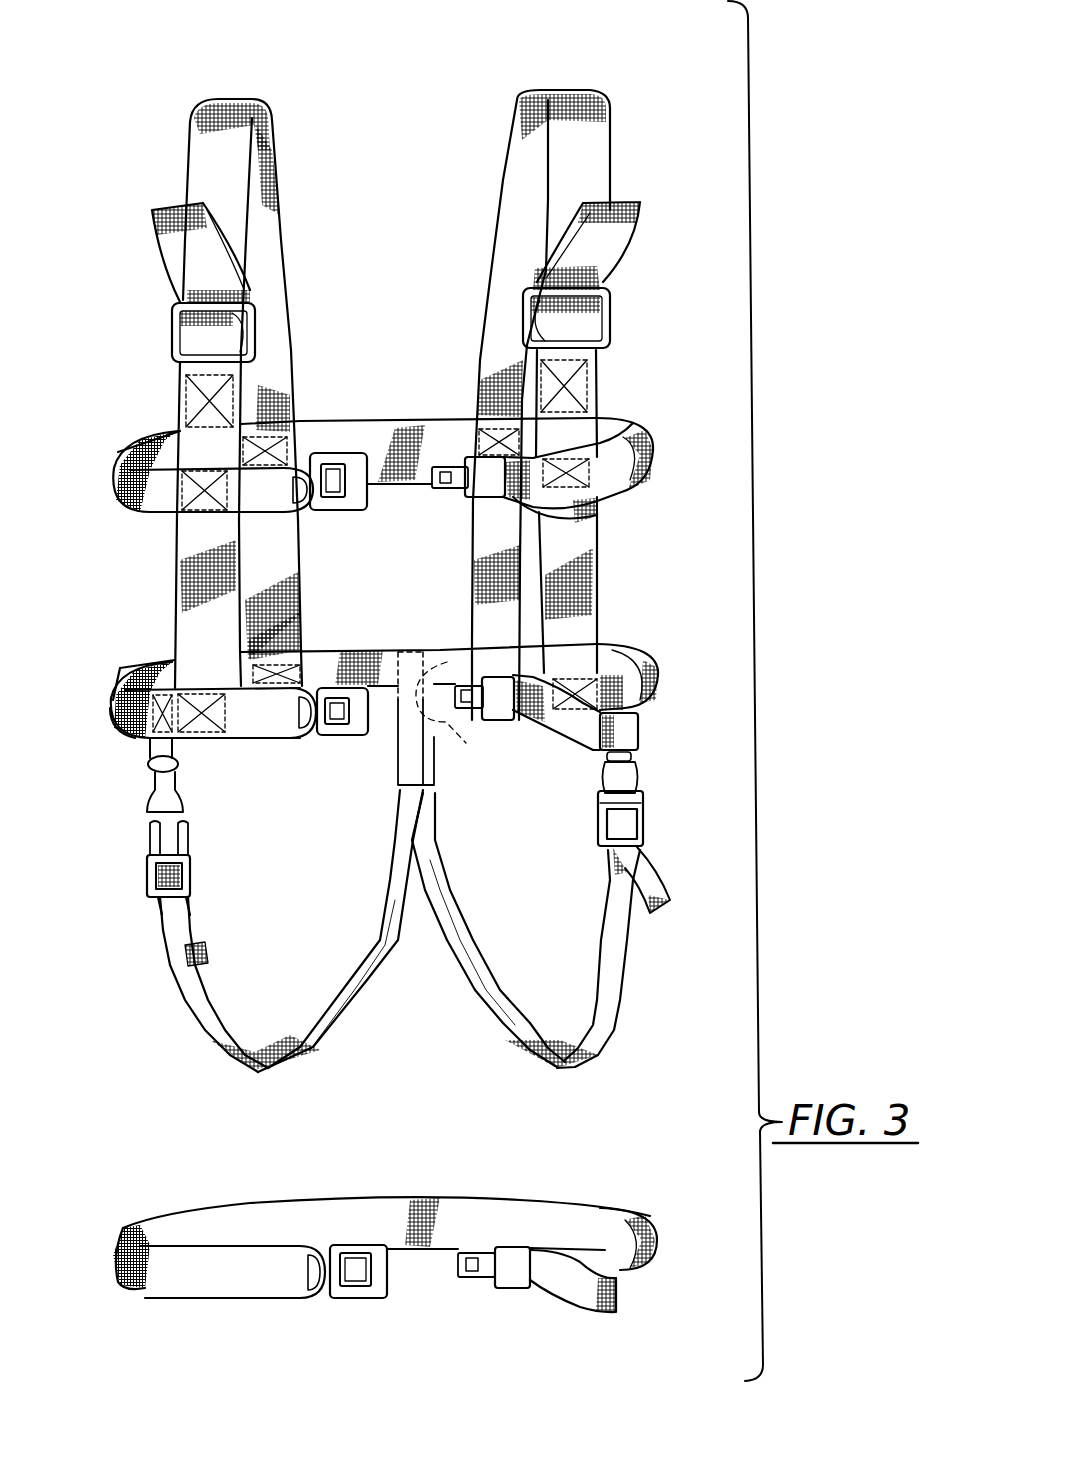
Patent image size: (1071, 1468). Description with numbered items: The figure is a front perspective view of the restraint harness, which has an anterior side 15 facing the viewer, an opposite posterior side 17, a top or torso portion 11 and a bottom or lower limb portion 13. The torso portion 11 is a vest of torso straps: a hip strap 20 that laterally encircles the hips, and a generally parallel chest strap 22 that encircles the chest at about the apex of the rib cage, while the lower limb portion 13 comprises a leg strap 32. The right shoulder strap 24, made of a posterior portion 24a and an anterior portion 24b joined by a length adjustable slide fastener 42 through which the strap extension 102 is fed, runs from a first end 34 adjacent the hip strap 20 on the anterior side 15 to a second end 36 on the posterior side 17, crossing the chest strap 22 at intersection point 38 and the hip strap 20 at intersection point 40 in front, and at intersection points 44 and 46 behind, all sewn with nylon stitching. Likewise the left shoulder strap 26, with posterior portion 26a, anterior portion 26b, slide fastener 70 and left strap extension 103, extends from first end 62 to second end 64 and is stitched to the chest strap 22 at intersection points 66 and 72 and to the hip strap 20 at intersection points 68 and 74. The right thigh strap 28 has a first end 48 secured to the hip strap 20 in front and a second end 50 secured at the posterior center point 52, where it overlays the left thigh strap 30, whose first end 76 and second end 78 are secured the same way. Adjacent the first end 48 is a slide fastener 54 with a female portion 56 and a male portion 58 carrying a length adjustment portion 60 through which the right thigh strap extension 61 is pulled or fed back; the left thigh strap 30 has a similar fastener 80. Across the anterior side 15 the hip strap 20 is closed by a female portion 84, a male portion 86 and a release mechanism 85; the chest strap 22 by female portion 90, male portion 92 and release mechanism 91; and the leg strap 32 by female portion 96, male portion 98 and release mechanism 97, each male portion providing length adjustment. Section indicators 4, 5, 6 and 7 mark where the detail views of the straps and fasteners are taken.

The section line 4- 4 is at (300, 163).
The section line 5- 5 is at (205, 302).
The section line 6- 6 is at (181, 697).
The section line 7- 7 is at (433, 650).
The torso portion 11 is at (637, 250).
The lower limb portion 13 is at (631, 1319).
The anterior side 15 is at (616, 558).
The posterior side 17 is at (476, 274).
The hip strap 20 is at (660, 668).
The chest strap 22 is at (656, 473).
The right shoulder strap 24 is at (248, 98).
The posterior portion of right shoulder strap 24a is at (285, 250).
The anterior portion of right shoulder strap 24b is at (180, 414).
The left shoulder strap 26 is at (583, 92).
The posterior portion of left shoulder strap 26a is at (497, 177).
The anterior portion of left shoulder strap 26b is at (598, 385).
The right thigh strap 28 is at (328, 1020).
The left thigh strap 30 is at (622, 985).
The leg strap 32 is at (656, 1240).
The first end of right shoulder strap 34 is at (212, 735).
The second end of right shoulder strap 36 is at (316, 640).
The intersection point 38 is at (284, 490).
The intersection point 40 is at (122, 666).
The length adjustable slide fastener 42 is at (172, 318).
The intersection point 44 is at (285, 432).
The intersection point 46 is at (280, 662).
The first end of right thigh strap 48 is at (125, 720).
The second end of right thigh strap 50 is at (396, 742).
The center point 52 is at (420, 668).
The length adjustable slide fastener 54 is at (131, 825).
The female portion 56 is at (185, 800).
The male portion 58 is at (192, 850).
The length adjustment portion 60 is at (150, 895).
The right thigh strap extension 61 is at (205, 955).
The first end of left shoulder strap 62 is at (600, 655).
The second end of left shoulder strap 64 is at (450, 712).
The intersection point 66 is at (656, 428).
The intersection point 68 is at (580, 672).
The length adjustable slide fastener 70 is at (611, 300).
The intersection point 72 is at (480, 430).
The intersection point 74 is at (476, 570).
The first end of left thigh strap 76 is at (650, 700).
The second end of left thigh strap 78 is at (440, 773).
The length adjustable slide fastener 80 is at (645, 812).
The female portion 84 is at (335, 737).
The release mechanism 85 is at (345, 738).
The male portion 86 is at (510, 722).
The female portion 90 is at (318, 453).
The release mechanism 91 is at (335, 463).
The male portion 92 is at (452, 488).
The female portion 96 is at (362, 1300).
The release mechanism 97 is at (375, 1280).
The male portion 98 is at (512, 1290).
The strap extension 102 is at (163, 222).
The left strap extension 103 is at (625, 203).